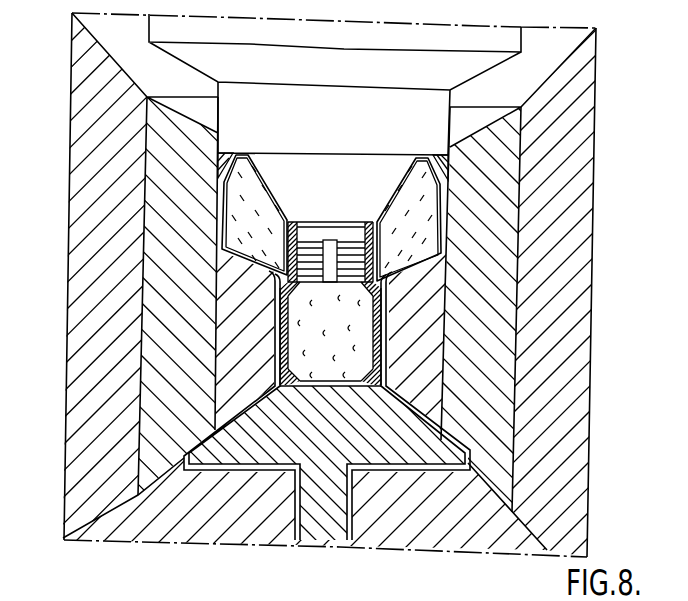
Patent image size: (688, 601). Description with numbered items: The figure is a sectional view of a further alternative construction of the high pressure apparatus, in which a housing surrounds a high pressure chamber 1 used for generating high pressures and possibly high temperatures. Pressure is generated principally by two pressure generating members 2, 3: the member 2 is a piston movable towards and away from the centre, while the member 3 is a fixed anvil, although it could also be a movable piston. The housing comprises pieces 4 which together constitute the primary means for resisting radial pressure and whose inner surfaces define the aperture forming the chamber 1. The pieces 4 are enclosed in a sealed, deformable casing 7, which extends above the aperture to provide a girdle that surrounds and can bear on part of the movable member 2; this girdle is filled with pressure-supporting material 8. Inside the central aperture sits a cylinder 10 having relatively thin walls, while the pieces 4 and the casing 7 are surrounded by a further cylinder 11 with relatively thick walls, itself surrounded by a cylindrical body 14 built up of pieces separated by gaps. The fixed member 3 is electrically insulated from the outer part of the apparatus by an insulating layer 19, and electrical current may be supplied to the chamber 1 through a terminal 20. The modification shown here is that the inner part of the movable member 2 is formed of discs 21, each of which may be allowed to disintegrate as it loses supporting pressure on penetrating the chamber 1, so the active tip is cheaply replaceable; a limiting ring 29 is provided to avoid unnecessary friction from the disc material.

The high pressure chamber 1 is at (300, 331).
The pressure generating member 2 is at (177, 37).
The pressure generating member 3 is at (471, 463).
The pieces 4 is at (217, 293).
The casing 7 is at (446, 186).
The pressure-supporting material 8 is at (425, 218).
The cylinder 10 is at (296, 350).
The cylinder 11 is at (501, 323).
The cylindrical body 14 is at (557, 407).
The insulating layer 19 is at (200, 435).
The terminal 20 is at (323, 522).
The discs 21 is at (305, 250).
The limiting ring 29 is at (280, 268).